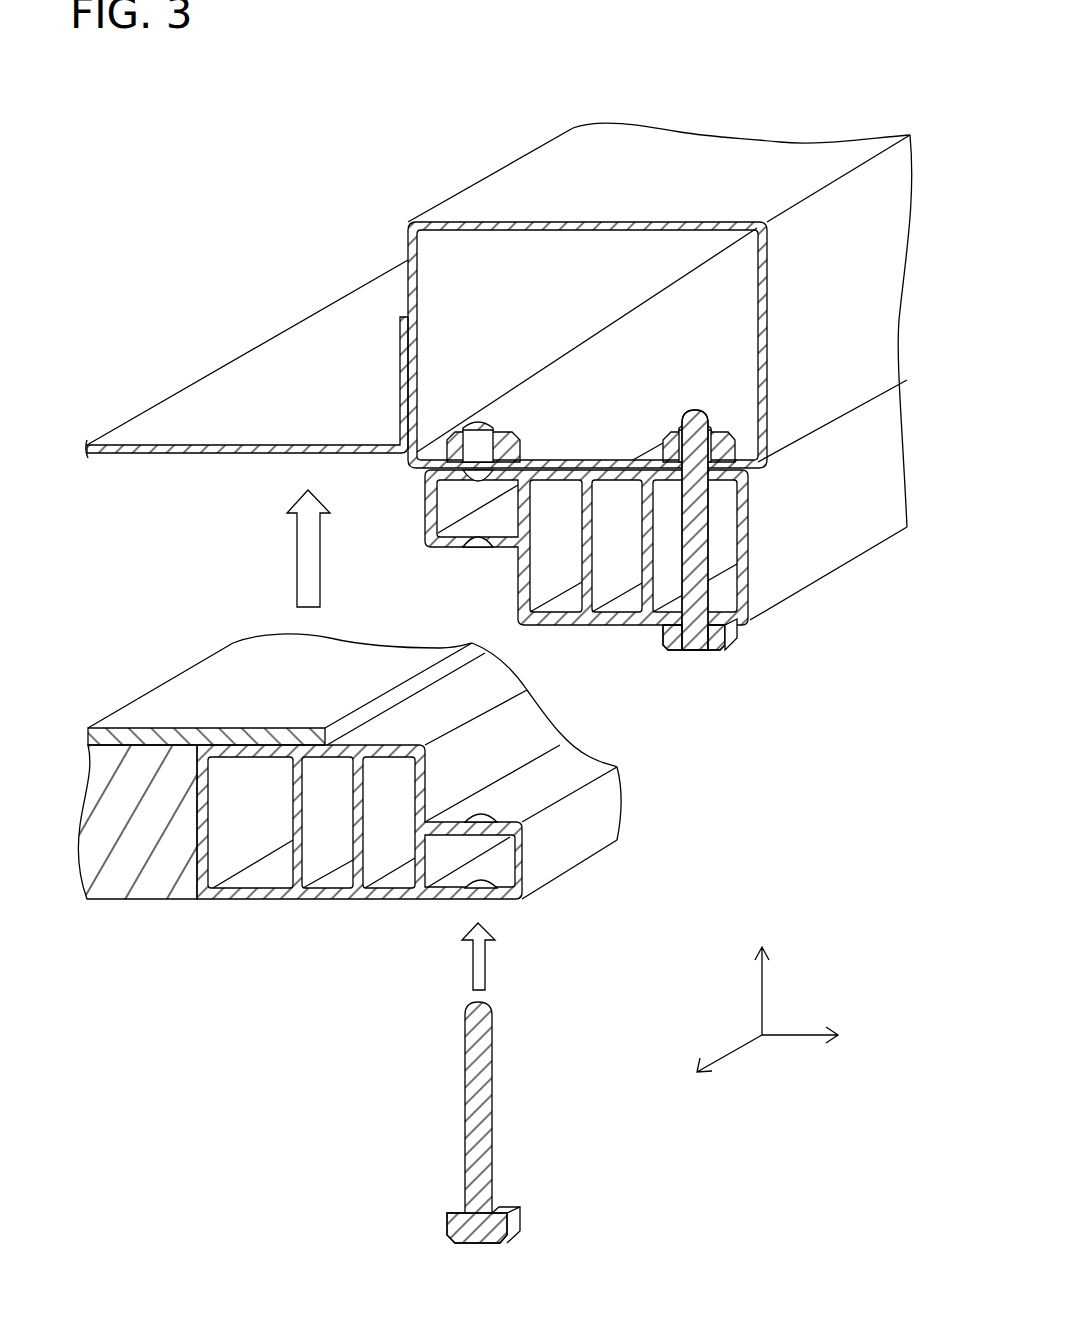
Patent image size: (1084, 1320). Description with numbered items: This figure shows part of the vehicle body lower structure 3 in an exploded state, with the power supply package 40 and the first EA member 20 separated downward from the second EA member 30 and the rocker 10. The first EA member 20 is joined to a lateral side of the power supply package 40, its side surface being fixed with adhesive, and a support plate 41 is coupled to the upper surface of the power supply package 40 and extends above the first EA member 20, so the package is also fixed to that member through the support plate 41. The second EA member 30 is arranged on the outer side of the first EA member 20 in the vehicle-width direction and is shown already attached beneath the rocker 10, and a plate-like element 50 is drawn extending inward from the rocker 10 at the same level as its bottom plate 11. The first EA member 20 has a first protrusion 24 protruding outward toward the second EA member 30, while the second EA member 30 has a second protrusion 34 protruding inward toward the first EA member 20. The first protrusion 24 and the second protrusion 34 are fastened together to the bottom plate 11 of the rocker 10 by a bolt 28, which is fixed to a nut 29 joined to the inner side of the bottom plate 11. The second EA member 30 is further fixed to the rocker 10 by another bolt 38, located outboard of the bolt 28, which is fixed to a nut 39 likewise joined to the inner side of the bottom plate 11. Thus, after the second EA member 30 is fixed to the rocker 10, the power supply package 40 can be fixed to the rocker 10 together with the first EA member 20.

The vehicle body lower structure 3 is at (178, 182).
The rocker 10 is at (656, 104).
The bottom plate 11 is at (583, 387).
The first EA member 20 is at (272, 920).
The first protrusion 24 is at (572, 858).
The bolt 28 is at (498, 1130).
The nut 29 is at (498, 420).
The second EA member 30 is at (657, 675).
The second protrusion 34 is at (421, 523).
The bolt 38 is at (708, 655).
The nut 39 is at (730, 447).
The power supply package 40 is at (148, 893).
The support plate 41 is at (163, 700).
The flange plate 50 is at (317, 327).